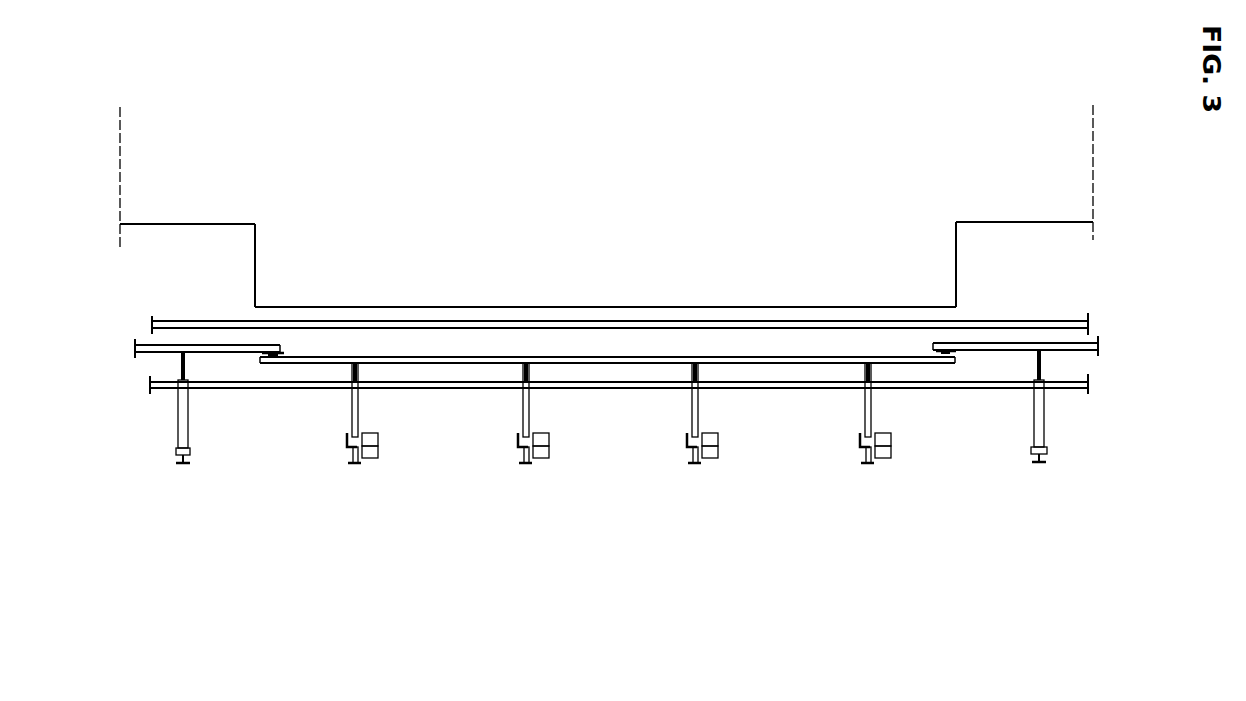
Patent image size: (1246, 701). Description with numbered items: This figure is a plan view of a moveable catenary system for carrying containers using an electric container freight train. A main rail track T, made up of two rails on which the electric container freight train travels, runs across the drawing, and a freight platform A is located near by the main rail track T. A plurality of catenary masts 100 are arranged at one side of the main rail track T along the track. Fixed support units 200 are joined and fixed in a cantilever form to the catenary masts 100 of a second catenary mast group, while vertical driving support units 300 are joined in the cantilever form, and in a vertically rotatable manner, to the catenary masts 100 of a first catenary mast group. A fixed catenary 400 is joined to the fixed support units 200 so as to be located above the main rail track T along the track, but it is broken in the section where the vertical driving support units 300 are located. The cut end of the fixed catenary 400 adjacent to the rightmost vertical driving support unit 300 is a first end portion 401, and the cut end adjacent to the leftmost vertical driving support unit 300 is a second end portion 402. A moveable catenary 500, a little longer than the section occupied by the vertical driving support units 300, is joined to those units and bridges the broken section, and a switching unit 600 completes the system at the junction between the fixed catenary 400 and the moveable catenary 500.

The catenary mast 100 is at (605, 473).
The fixed support unit 200 is at (197, 420).
The vertical driving support unit 300 is at (347, 418).
The fixed catenary 400 is at (141, 355).
The first end portion 401 is at (935, 345).
The second end portion 402 is at (280, 346).
The moveable catenary 500 is at (465, 363).
The switching unit 600 is at (270, 352).
The freight platform A is at (606, 220).
The main rail track T is at (612, 389).